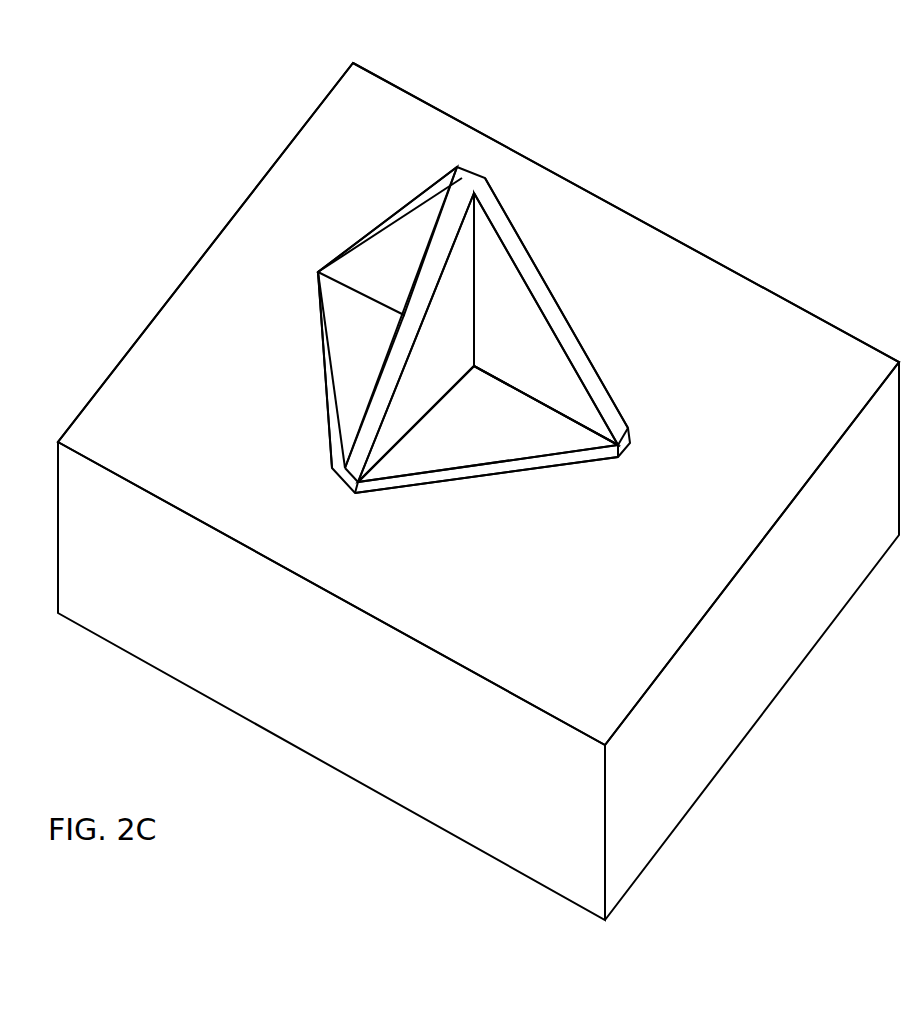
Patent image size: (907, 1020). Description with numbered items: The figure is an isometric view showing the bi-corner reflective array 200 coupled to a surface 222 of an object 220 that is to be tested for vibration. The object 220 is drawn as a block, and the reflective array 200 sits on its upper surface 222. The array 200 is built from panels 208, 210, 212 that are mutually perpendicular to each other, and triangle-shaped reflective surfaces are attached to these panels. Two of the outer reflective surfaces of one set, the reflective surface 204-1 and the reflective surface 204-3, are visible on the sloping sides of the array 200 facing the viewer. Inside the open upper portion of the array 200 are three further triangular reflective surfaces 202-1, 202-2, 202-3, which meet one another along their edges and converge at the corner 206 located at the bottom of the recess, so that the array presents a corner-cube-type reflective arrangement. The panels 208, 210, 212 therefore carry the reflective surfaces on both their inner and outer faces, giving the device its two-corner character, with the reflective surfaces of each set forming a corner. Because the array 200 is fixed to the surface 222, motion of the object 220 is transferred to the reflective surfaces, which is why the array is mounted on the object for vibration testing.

The bi-corner reflective array 200 is at (543, 109).
The inner pit face 202-1 is at (482, 435).
The inner pit face 202-2 is at (469, 355).
The inner pit face 202-3 is at (547, 355).
The triangle shaped reflective surface 204-1 is at (378, 355).
The triangle shaped reflective surface 204-3 is at (403, 277).
The corner 206 is at (475, 368).
The panel 208 is at (525, 473).
The panel 210 is at (525, 258).
The panel 212 is at (447, 233).
The object 220 is at (141, 301).
The surface 222 is at (581, 631).